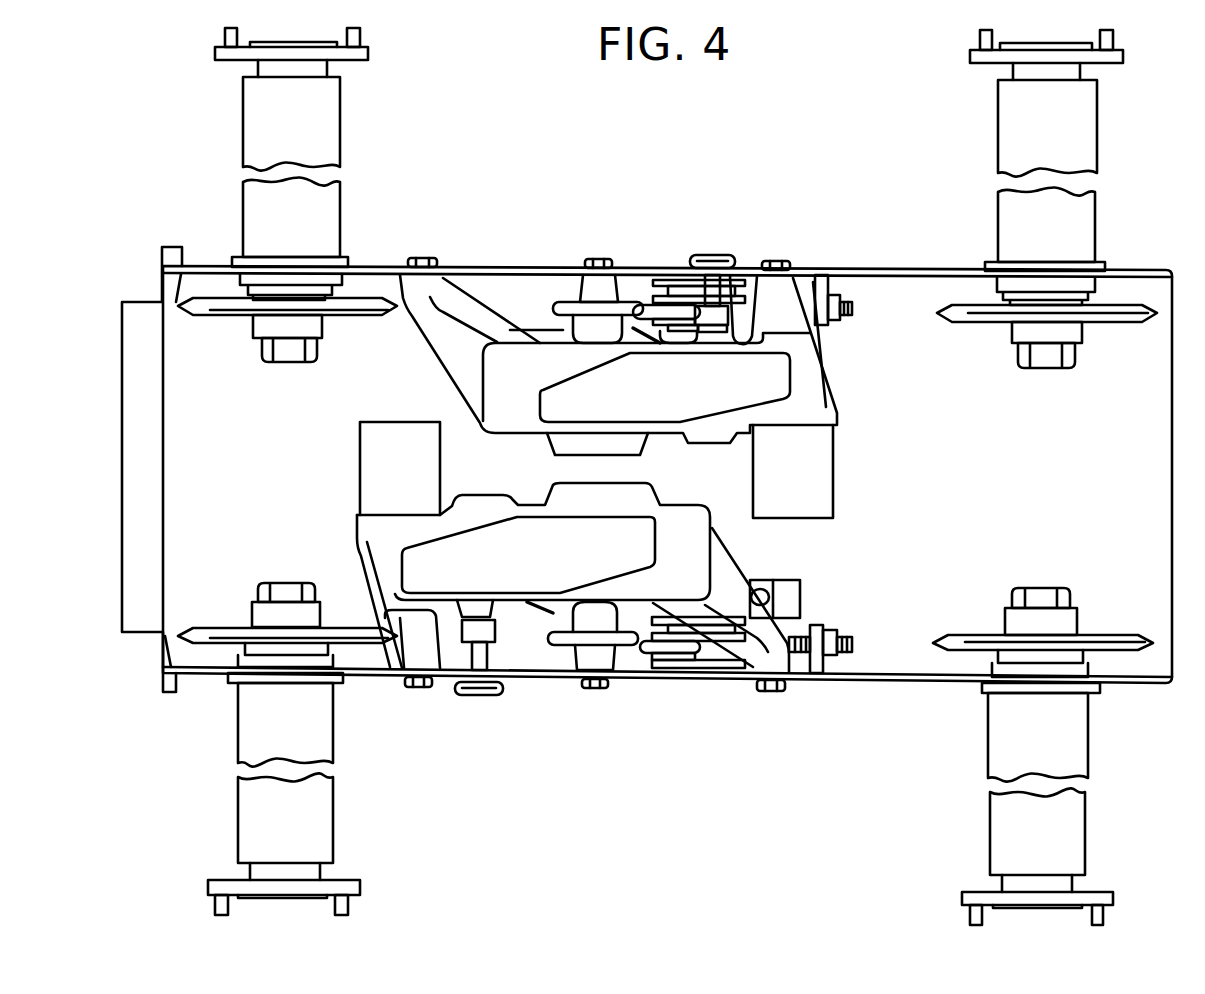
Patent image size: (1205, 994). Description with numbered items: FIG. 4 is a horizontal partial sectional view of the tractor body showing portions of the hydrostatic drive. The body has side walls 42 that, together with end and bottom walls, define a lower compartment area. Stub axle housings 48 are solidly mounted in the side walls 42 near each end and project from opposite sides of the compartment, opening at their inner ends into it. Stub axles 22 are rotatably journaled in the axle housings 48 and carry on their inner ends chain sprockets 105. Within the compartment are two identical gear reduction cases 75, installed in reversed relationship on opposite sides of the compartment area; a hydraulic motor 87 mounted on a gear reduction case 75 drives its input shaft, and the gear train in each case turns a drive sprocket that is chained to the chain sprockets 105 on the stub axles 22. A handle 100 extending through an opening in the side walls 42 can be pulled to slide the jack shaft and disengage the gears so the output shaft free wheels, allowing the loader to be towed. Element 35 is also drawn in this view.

The stub axle 22 is at (316, 68).
The bolster block 35 is at (385, 470).
The side wall 42 is at (527, 266).
The stub axle housing 48 is at (317, 232).
The gear reduction case 75 is at (680, 527).
The second hydraulic motor 87 is at (814, 481).
The handle 100 is at (712, 253).
The chain sprocket 105 is at (210, 308).